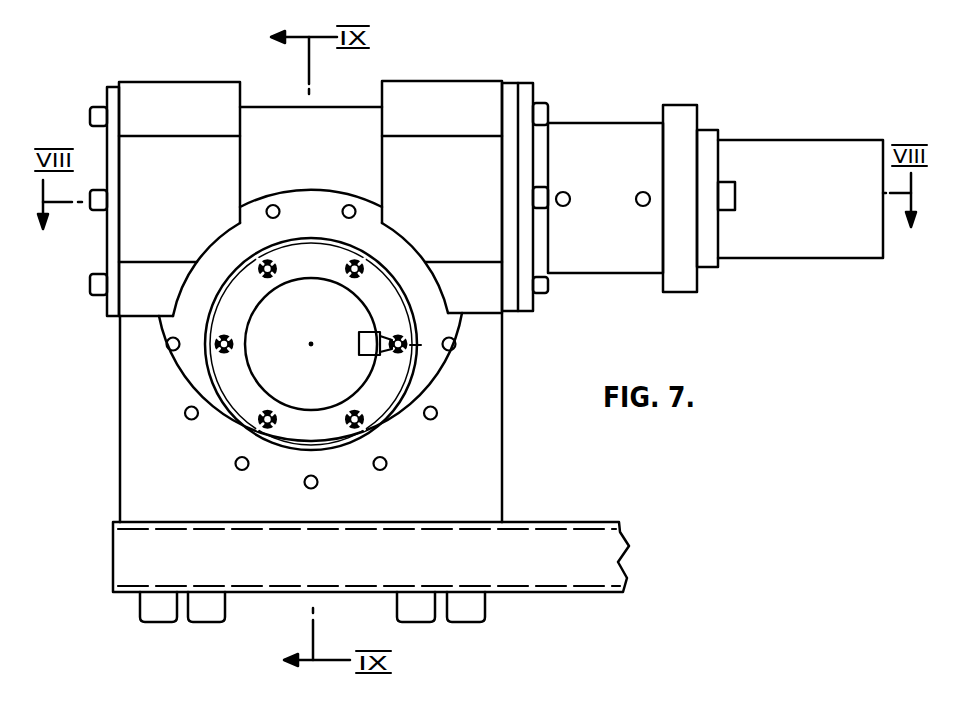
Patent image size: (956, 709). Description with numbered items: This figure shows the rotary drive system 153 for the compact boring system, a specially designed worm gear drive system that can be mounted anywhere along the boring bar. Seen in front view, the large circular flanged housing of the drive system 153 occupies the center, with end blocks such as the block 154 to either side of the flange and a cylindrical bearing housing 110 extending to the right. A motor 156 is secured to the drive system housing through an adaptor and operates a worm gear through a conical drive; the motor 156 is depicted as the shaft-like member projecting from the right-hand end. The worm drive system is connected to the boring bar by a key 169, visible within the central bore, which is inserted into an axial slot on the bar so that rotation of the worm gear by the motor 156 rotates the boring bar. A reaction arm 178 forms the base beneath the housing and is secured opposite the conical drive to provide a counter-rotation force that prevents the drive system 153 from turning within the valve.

The bearing housing 110 is at (612, 274).
The rotary drive system 153 is at (708, 537).
The end block 154 is at (449, 81).
The motor 156 is at (805, 140).
The key 169 is at (359, 345).
The reaction arm 178 is at (562, 592).